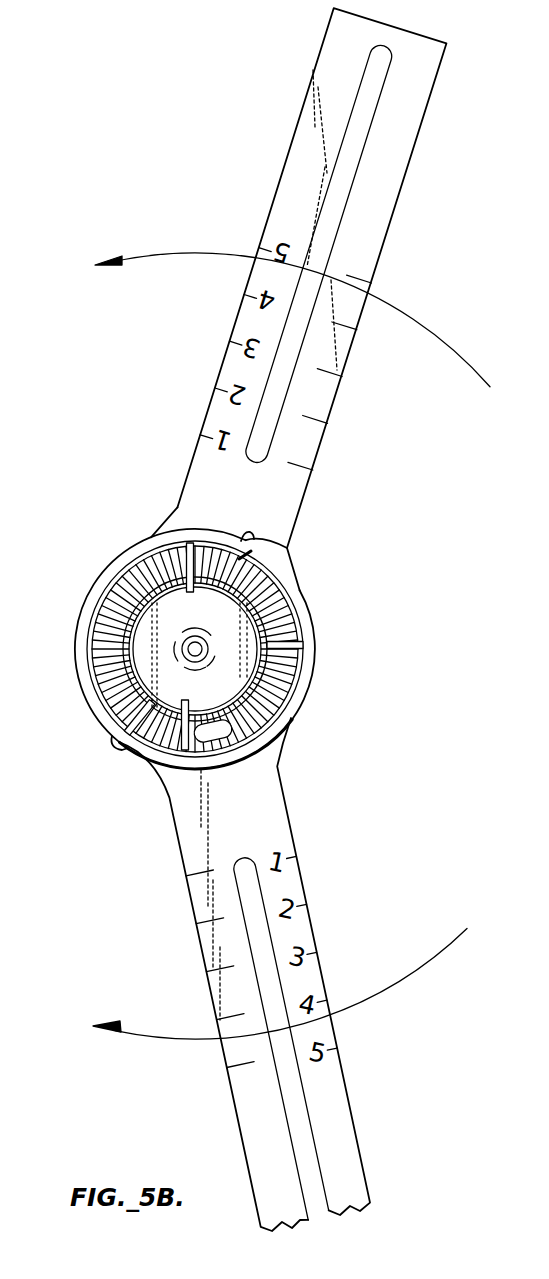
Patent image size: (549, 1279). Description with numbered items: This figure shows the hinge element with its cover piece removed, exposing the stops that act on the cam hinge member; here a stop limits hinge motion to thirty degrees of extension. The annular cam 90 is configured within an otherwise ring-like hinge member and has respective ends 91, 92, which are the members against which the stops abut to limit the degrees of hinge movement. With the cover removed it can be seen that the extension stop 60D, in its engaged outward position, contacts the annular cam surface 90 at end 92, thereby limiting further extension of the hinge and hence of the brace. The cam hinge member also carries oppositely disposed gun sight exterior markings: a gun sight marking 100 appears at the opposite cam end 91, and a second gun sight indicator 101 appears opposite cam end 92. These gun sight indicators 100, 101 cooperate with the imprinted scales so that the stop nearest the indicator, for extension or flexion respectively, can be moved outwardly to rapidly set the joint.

The extension stop 60D is at (95, 696).
The annular cam 90 is at (292, 716).
The cam end 91 is at (252, 554).
The cam end 92 is at (135, 750).
The gun sight marking 100 is at (118, 746).
The gun sight indicator 101 is at (272, 538).